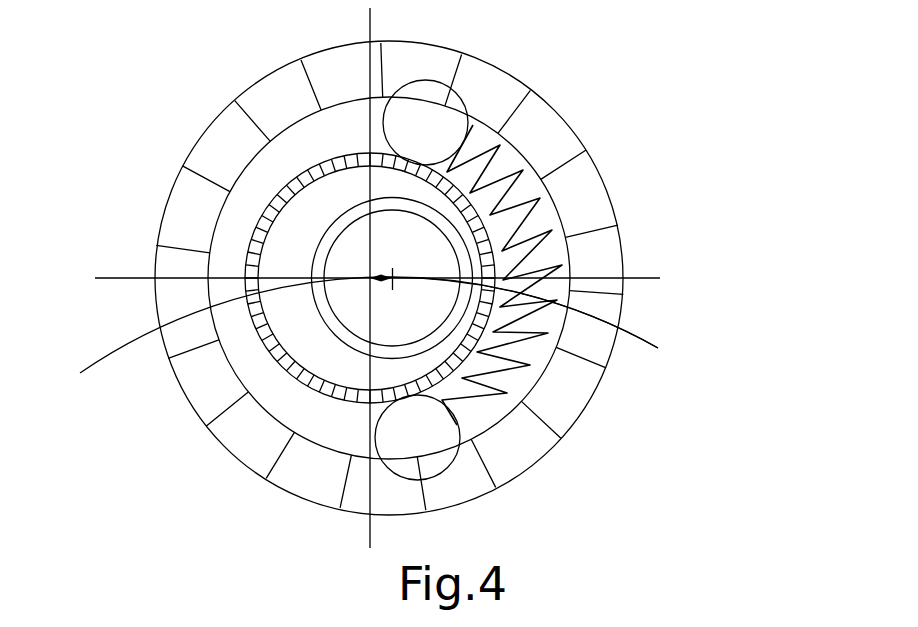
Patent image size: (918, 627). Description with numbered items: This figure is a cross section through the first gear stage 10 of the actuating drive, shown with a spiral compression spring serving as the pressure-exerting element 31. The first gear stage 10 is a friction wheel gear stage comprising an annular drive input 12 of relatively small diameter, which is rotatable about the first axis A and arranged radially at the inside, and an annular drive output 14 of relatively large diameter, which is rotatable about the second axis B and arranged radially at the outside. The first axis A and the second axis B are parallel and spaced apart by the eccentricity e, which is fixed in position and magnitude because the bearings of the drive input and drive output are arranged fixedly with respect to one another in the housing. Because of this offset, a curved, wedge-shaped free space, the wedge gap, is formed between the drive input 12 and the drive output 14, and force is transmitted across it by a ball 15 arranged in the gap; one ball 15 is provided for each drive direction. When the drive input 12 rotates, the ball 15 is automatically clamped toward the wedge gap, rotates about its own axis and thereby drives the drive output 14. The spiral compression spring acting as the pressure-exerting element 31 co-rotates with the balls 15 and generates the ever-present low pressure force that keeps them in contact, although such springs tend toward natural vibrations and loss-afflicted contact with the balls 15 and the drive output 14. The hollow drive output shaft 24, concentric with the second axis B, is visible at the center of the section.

The first gear stage 10 is at (222, 81).
The drive input 12 is at (278, 350).
The drive output 14 is at (252, 446).
The ball 15 is at (448, 120).
The drive output shaft 24 is at (343, 222).
The pressure-exerting element 31 is at (520, 200).
The first axis A is at (358, 335).
The second axis B is at (528, 321).
The eccentricity e is at (381, 266).